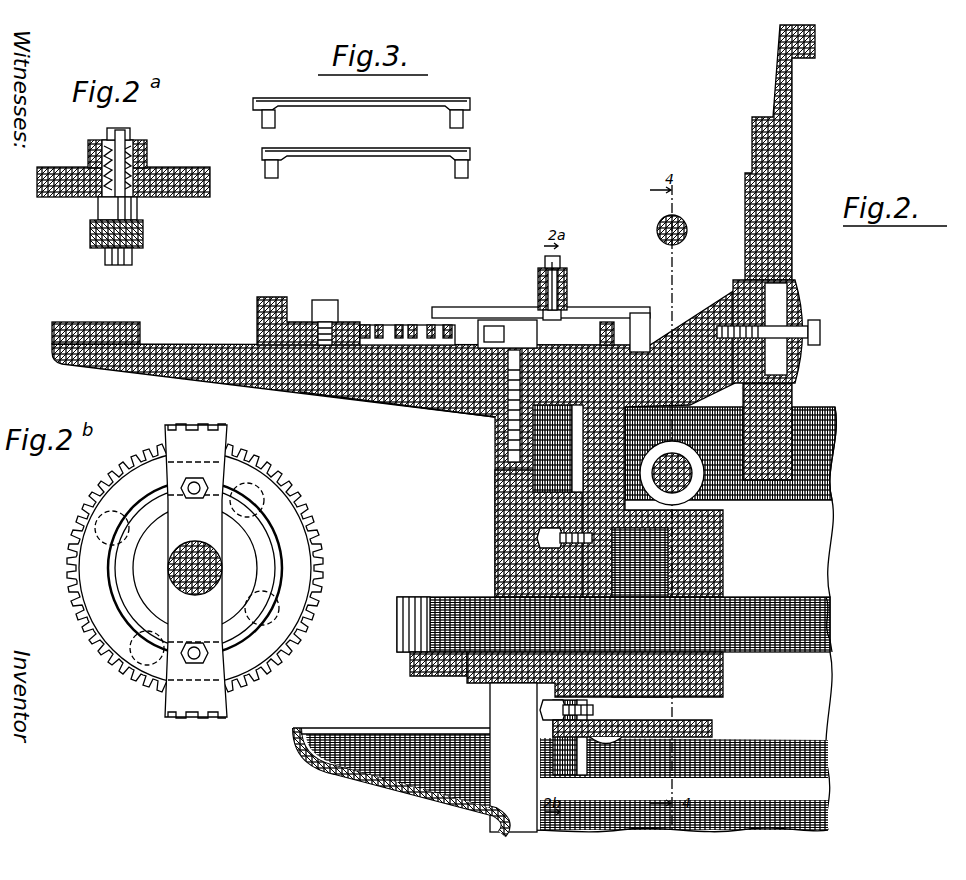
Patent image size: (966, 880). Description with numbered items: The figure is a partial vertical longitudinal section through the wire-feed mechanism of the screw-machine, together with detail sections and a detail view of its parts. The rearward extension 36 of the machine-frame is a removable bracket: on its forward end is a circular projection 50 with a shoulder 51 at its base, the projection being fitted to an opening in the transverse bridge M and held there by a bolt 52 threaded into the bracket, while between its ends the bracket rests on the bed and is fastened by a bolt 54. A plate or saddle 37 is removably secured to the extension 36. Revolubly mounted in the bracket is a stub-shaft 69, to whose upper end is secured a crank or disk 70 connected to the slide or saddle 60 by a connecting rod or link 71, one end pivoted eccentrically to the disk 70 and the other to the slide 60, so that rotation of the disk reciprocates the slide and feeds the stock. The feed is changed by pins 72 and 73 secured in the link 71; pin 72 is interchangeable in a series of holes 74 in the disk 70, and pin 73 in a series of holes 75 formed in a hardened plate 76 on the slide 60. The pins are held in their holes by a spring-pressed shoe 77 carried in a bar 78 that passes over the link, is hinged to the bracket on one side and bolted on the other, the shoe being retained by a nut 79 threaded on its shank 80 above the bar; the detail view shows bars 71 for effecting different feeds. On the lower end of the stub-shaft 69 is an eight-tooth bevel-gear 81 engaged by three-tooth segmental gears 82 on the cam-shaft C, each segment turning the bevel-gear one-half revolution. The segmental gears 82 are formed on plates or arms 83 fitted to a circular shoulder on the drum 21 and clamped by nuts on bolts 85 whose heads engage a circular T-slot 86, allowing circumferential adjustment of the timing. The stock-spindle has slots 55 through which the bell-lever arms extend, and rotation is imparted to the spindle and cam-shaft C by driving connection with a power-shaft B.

In FIG. 2, the drum 21 is at (606, 750).
In FIG. 2B, the drum 21 is at (88, 548).
In FIG. 2, the rearward extension of the machine-frame 36 is at (178, 333).
In FIG. 2, the plate or saddle 37 is at (108, 310).
In FIG. 2, the circular projection 50 is at (776, 329).
In FIG. 2, the shoulder 51 is at (792, 262).
In FIG. 2, the bolt 52 is at (820, 332).
In FIG. 2, the bolt 54 is at (480, 414).
In FIG. 2, the slots 55 is at (805, 300).
In FIG. 2, the slide or saddle 60 is at (294, 322).
In FIG. 2, the stub-shaft 69 is at (506, 452).
In FIG. 2, the crank or disk 70 is at (607, 322).
In FIG. 2, the connecting rod or link 71 is at (476, 312).
In FIG. 2A, the connecting rod or link 71 is at (90, 234).
In FIG. 3, the connecting rod or link 71 is at (346, 153).
In FIG. 2, the pin 72 is at (650, 330).
In FIG. 2A, the pin 72 is at (105, 256).
In FIG. 3, the pin 72 is at (468, 170).
In FIG. 2, the pin 73 is at (425, 325).
In FIG. 2, the holes 74 is at (548, 335).
In FIG. 2, the holes 75 is at (398, 325).
In FIG. 3, the holes 75 is at (266, 172).
In FIG. 2, the plate 76 is at (336, 322).
In FIG. 2, the spring-pressed shoe 77 is at (543, 312).
In FIG. 2A, the spring-pressed shoe 77 is at (98, 210).
In FIG. 2, the bar 78 is at (538, 280).
In FIG. 2A, the bar 78 is at (192, 197).
In FIG. 2, the nut 79 is at (560, 262).
In FIG. 2A, the nut 79 is at (107, 132).
In FIG. 2, the shank 80 is at (558, 283).
In FIG. 2A, the shank 80 is at (125, 140).
In FIG. 2, the bevel-gear 81 is at (540, 477).
In FIG. 2, the segmental gears 82 is at (545, 492).
In FIG. 2B, the segmental gears 82 is at (200, 426).
In FIG. 2, the plates or arms 83 is at (552, 515).
In FIG. 2B, the plates or arms 83 is at (192, 468).
In FIG. 2, the bolts 85 is at (537, 540).
In FIG. 2B, the bolts 85 is at (204, 484).
In FIG. 2, the circular T-slot 86 is at (592, 548).
In FIG. 2B, the circular T-slot 86 is at (140, 503).
In FIG. 2, the power-shaft B is at (687, 231).
In FIG. 2, the cam-shaft C is at (822, 612).
In FIG. 2B, the cam-shaft C is at (168, 565).
In FIG. 2, the bearing D is at (690, 488).
In FIG. 2, the bridge M is at (792, 200).